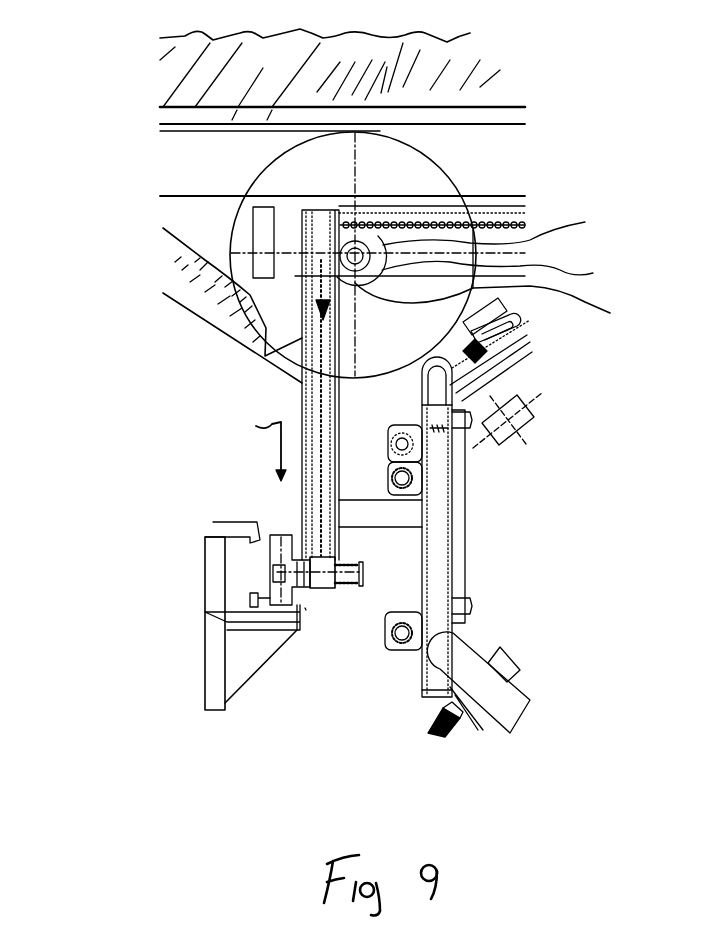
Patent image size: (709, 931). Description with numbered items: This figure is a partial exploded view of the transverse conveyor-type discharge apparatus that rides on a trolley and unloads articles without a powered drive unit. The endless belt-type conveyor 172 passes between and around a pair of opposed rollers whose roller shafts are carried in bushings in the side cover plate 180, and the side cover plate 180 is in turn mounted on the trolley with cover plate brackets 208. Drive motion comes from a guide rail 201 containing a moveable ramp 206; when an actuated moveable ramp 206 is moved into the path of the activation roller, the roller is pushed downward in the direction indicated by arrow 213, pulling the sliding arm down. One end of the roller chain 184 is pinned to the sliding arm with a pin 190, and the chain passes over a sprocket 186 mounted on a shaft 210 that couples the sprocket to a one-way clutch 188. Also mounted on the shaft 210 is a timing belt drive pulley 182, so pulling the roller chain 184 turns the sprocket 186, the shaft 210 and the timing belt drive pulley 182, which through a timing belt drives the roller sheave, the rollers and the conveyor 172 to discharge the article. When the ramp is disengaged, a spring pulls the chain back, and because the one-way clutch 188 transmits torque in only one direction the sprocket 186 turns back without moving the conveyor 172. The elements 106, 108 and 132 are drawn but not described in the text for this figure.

The conveyor 172 is at (480, 80).
The timing belt drive pulley 182 is at (318, 191).
The roller chain 184 is at (525, 226).
The sprocket 186 is at (509, 227).
The one-way clutch 188 is at (514, 273).
The shaft 210 is at (512, 306).
The cover plate bracket 208 is at (530, 309).
The coupling 106 is at (518, 447).
The side cover plate 180 is at (175, 258).
The pin 190 is at (302, 342).
The arrow 213 is at (250, 446).
The guide rail 201 is at (205, 686).
The moveable ramp 206 is at (240, 698).
The motor 108 is at (525, 713).
The bolt 132 is at (445, 737).